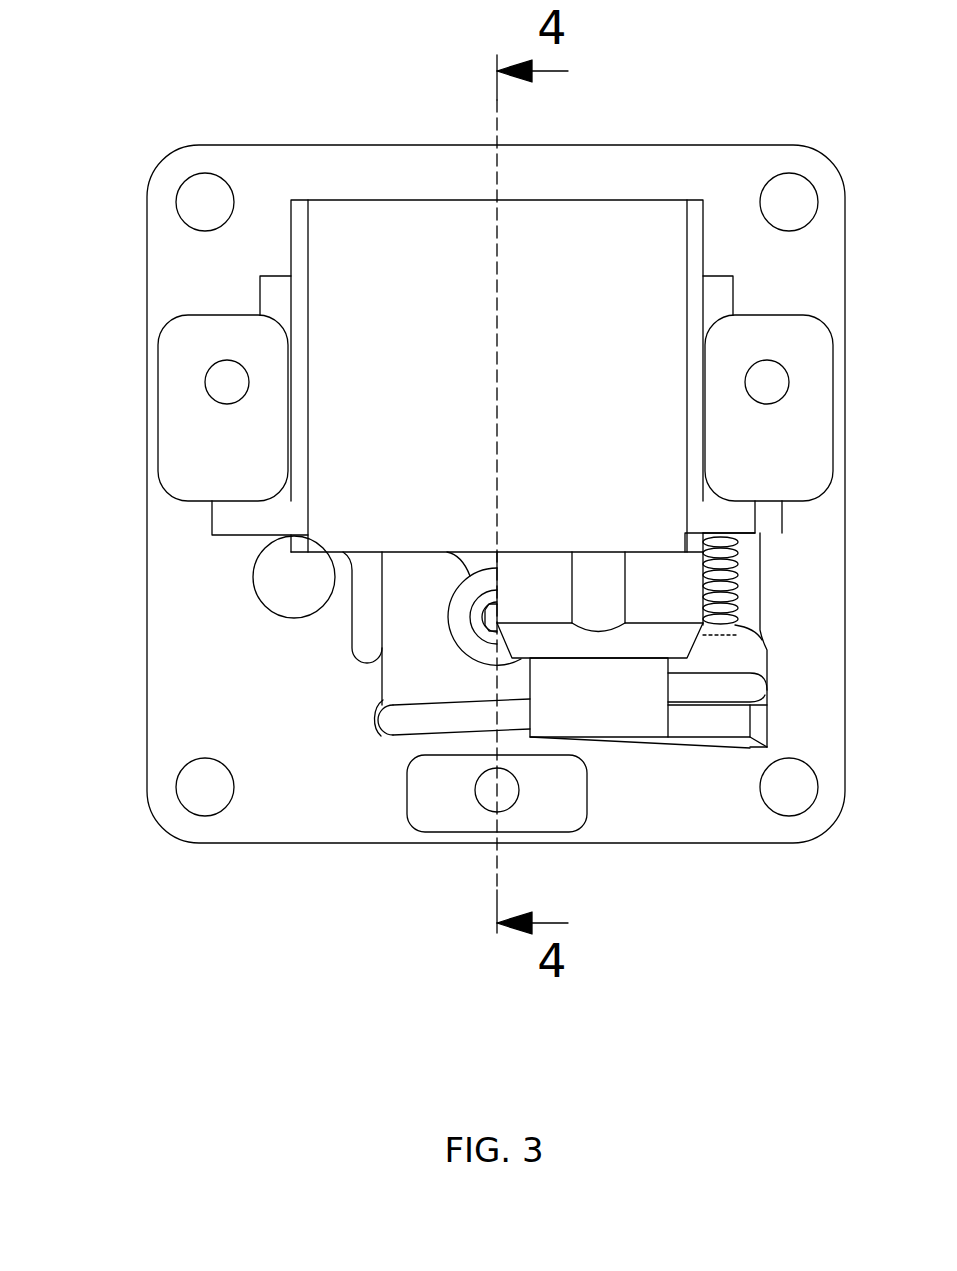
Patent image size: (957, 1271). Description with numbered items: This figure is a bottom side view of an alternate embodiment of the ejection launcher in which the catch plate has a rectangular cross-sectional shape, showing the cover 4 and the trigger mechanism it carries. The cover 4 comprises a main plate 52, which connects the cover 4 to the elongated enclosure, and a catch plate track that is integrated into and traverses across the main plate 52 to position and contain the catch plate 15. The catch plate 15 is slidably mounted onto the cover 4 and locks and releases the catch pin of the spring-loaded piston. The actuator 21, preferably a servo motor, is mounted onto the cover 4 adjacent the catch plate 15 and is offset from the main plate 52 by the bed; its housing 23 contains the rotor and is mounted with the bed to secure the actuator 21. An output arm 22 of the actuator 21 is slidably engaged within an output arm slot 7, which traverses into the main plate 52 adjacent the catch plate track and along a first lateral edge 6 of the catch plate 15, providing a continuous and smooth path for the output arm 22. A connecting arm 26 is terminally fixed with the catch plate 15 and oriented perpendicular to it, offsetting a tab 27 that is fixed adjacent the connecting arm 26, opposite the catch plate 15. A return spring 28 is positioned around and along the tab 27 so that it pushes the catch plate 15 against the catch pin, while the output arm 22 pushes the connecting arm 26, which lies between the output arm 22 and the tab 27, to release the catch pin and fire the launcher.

The cover 4 is at (148, 190).
The main plate 52 is at (750, 157).
The actuator 21 is at (388, 201).
The housing 23 is at (525, 213).
The catch plate 15 is at (387, 673).
The first lateral edge 6 is at (383, 700).
The output arm slot 7 is at (381, 733).
The return spring 28 is at (740, 573).
The tab 27 is at (738, 598).
The connecting arm 26 is at (758, 682).
The output arm 22 is at (757, 722).